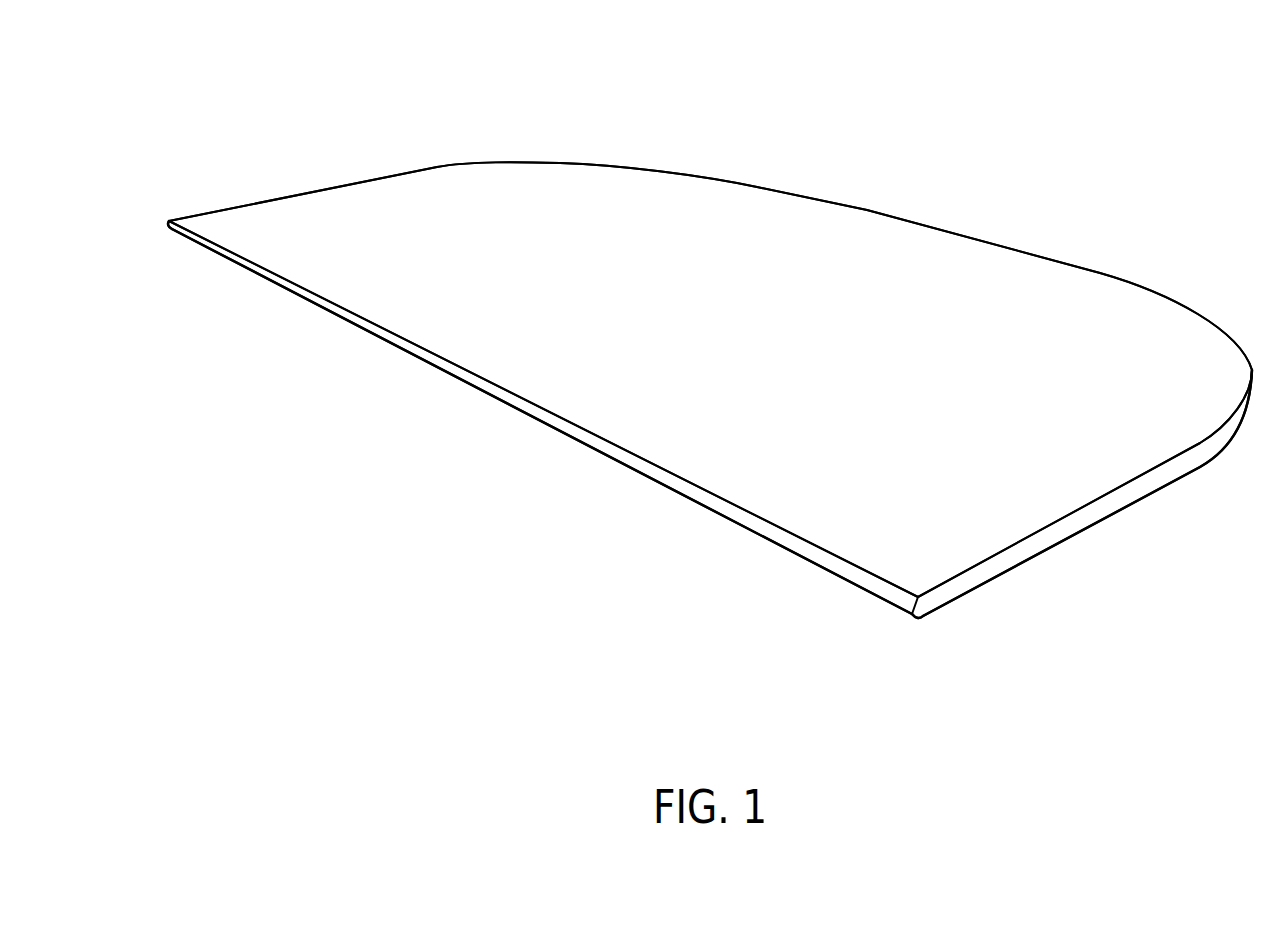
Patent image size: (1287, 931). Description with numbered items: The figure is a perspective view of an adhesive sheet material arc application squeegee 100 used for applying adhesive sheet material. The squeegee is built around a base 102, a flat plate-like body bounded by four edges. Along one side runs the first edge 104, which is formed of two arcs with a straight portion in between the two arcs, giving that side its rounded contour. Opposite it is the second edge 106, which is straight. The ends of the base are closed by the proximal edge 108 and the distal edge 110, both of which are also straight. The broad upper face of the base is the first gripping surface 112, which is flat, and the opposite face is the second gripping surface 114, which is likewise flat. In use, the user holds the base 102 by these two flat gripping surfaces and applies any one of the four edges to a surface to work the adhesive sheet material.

The adhesive sheet material arc application squeegee 100 is at (692, 361).
The base 102 is at (870, 539).
The first edge 104 is at (867, 210).
The second edge 106 is at (560, 423).
The proximal edge 108 is at (1103, 502).
The distal edge 110 is at (218, 207).
The first gripping surface 112 is at (629, 187).
The second gripping surface 114 is at (968, 593).